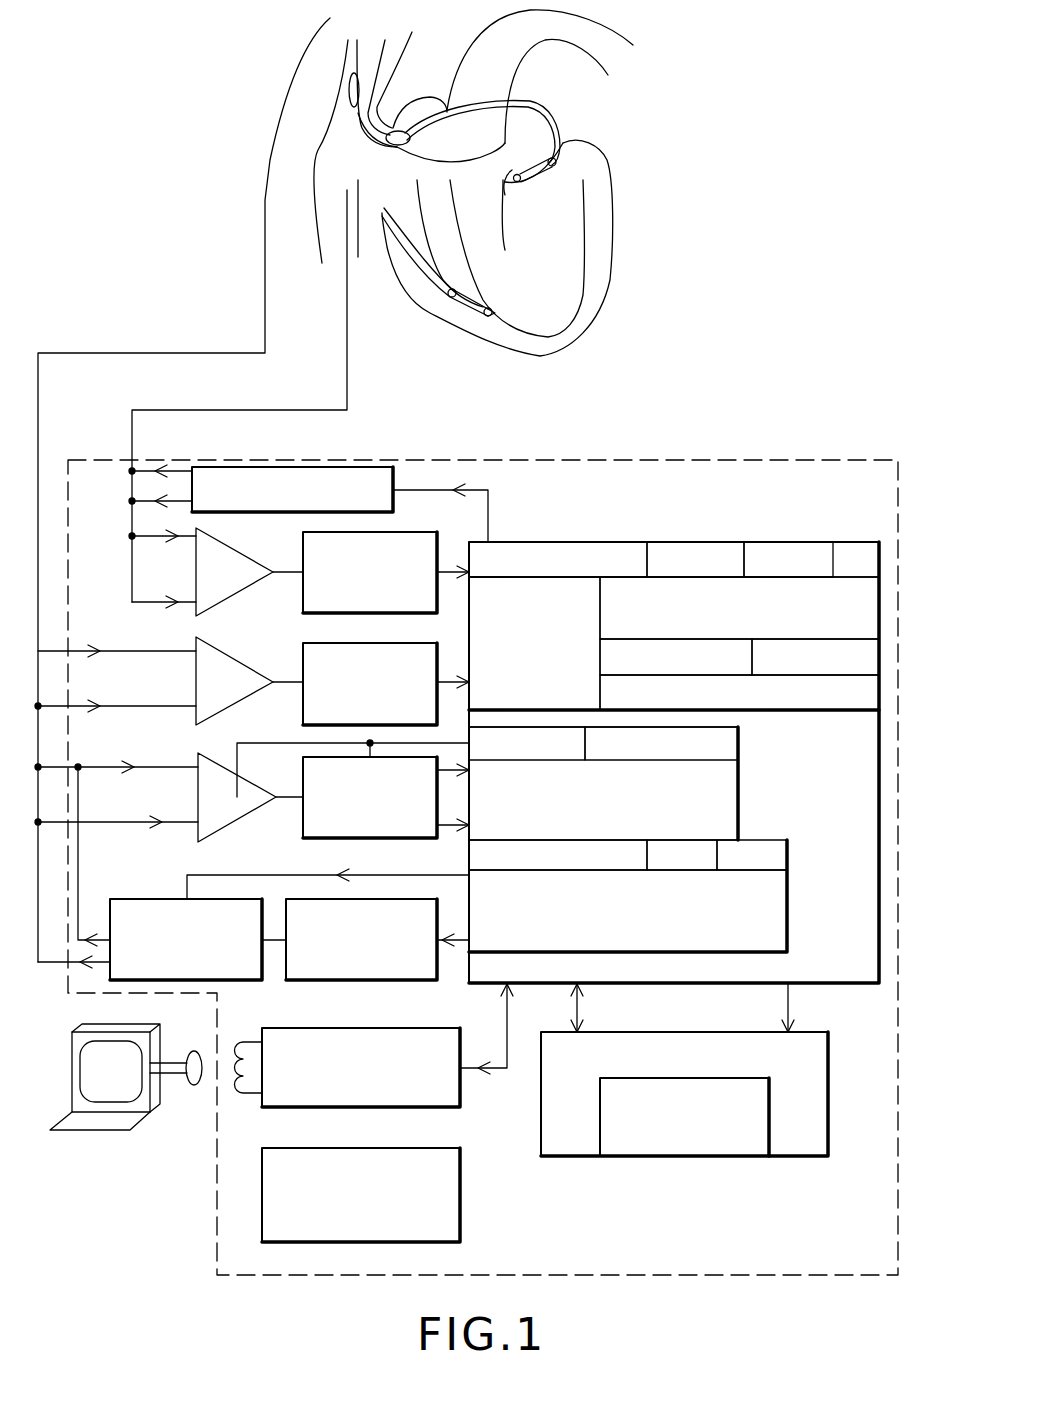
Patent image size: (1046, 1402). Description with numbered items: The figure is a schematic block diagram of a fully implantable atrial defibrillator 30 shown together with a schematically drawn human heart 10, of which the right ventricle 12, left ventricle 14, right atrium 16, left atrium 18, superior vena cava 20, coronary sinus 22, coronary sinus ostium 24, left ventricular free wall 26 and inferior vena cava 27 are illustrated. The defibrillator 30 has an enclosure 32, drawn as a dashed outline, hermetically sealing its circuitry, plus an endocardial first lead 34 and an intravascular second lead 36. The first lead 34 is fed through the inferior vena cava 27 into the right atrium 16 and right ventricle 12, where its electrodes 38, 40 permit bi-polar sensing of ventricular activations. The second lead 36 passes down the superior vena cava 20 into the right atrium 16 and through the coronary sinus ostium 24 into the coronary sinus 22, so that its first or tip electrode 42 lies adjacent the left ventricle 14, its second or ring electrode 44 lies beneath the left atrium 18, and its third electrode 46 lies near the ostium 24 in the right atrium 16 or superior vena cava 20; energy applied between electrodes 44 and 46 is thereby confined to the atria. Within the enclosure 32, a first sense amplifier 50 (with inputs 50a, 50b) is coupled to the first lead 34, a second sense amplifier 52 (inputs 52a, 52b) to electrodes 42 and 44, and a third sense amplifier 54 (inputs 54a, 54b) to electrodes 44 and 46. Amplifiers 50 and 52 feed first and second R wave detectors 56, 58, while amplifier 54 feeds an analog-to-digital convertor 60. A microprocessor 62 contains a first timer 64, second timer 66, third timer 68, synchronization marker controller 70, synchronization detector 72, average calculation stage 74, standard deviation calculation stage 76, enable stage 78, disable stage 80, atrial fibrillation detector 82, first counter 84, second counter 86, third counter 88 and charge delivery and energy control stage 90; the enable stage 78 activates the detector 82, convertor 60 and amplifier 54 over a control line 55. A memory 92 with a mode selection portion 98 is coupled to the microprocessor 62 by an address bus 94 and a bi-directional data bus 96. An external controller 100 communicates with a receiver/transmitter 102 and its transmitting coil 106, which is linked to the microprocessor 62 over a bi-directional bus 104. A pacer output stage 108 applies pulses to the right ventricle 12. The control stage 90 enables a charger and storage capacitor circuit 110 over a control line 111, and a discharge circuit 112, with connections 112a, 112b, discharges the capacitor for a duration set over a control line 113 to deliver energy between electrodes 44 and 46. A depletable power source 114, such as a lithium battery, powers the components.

The human heart 10 is at (733, 82).
The right ventricle 12 is at (407, 252).
The left ventricle 14 is at (558, 282).
The right atrium 16 is at (333, 128).
The left atrium 18 is at (522, 103).
The superior vena cava 20 is at (370, 60).
The coronary sinus 22 is at (457, 110).
The coronary sinus ostium 24 is at (393, 128).
The left ventricular free wall 26 is at (560, 158).
The inferior vena cava 27 is at (330, 244).
The atrial defibrillator 30 is at (758, 404).
The enclosure 32 is at (565, 460).
The endocardial first lead 34 is at (348, 388).
The intravascular second lead 36 is at (265, 340).
The electrode 38 is at (489, 318).
The electrode 40 is at (452, 298).
The first or tip electrode 42 is at (510, 197).
The second or ring electrode 44 is at (556, 172).
The third electrode 46 is at (352, 88).
The first sense amplifier 50 is at (240, 584).
The amplifier input 50a is at (196, 600).
The amplifier input 50b is at (196, 534).
The second sense amplifier 52 is at (240, 694).
The amplifier input 52a is at (196, 710).
The amplifier input 52b is at (196, 652).
The third sense amplifier 54 is at (242, 809).
The amplifier input 54a is at (198, 830).
The amplifier input 54b is at (198, 770).
The control line 55 is at (262, 743).
The first R wave detector 56 is at (303, 594).
The second R wave detector 58 is at (303, 654).
The analog-to-digital convertor 60 is at (372, 838).
The microprocessor 62 is at (826, 786).
The first timer 64 is at (557, 548).
The second timer 66 is at (688, 548).
The third timer 68 is at (800, 548).
The synchronization marker controller 70 is at (806, 606).
The synchronization detector 72 is at (550, 608).
The average calculation stage 74 is at (830, 640).
The standard deviation calculation stage 76 is at (858, 705).
The enable stage 78 is at (556, 727).
The disable stage 80 is at (738, 750).
The atrial fibrillation detector 82 is at (695, 814).
The first counter 84 is at (469, 853).
The second counter 86 is at (710, 846).
The third counter 88 is at (786, 855).
The charge delivery and energy control stage 90 is at (787, 925).
The memory 92 is at (570, 1140).
The multiple-bit address bus 94 is at (788, 1010).
The bi-directional multiple-bit data bus 96 is at (580, 1005).
The mode selection portion 98 is at (670, 1142).
The external controller 100 is at (96, 1024).
The receiver/transmitter 102 is at (360, 1107).
The bi-directional bus 104 is at (490, 1070).
The transmitting coil 106 is at (245, 1040).
The pacer output stage 108 is at (320, 467).
The charger and storage capacitor circuit 110 is at (358, 975).
The control line 111 is at (455, 952).
The discharge circuit 112 is at (262, 978).
The discharge circuit output 112a is at (108, 968).
The discharge circuit input 112b is at (110, 905).
The control line 113 is at (228, 876).
The depletable power source 114 is at (462, 1194).